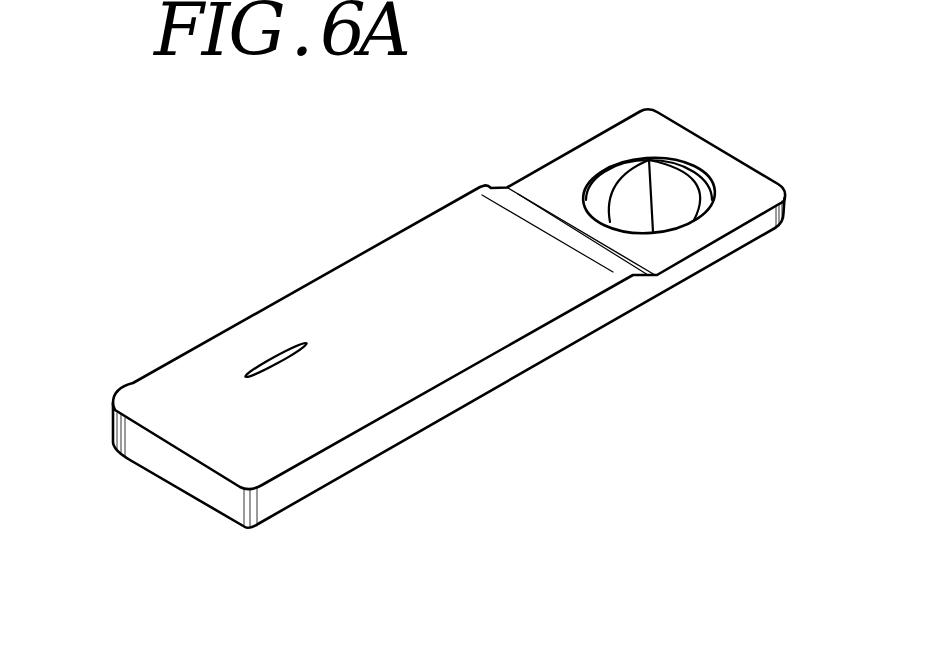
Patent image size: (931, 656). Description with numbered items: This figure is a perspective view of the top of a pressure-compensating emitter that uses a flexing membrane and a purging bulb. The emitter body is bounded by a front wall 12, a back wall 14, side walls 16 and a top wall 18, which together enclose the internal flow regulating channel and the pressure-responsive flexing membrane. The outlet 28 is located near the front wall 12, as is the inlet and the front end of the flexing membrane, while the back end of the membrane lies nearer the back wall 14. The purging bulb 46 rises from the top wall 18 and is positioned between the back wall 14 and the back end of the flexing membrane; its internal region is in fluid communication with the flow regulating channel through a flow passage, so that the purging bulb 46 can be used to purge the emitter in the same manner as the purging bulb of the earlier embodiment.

The front wall 12 is at (435, 272).
The back wall 14 is at (743, 162).
The side walls 16 is at (592, 400).
The top wall 18 is at (397, 268).
The outlet 28 is at (268, 357).
The purging bulb 46 is at (710, 52).